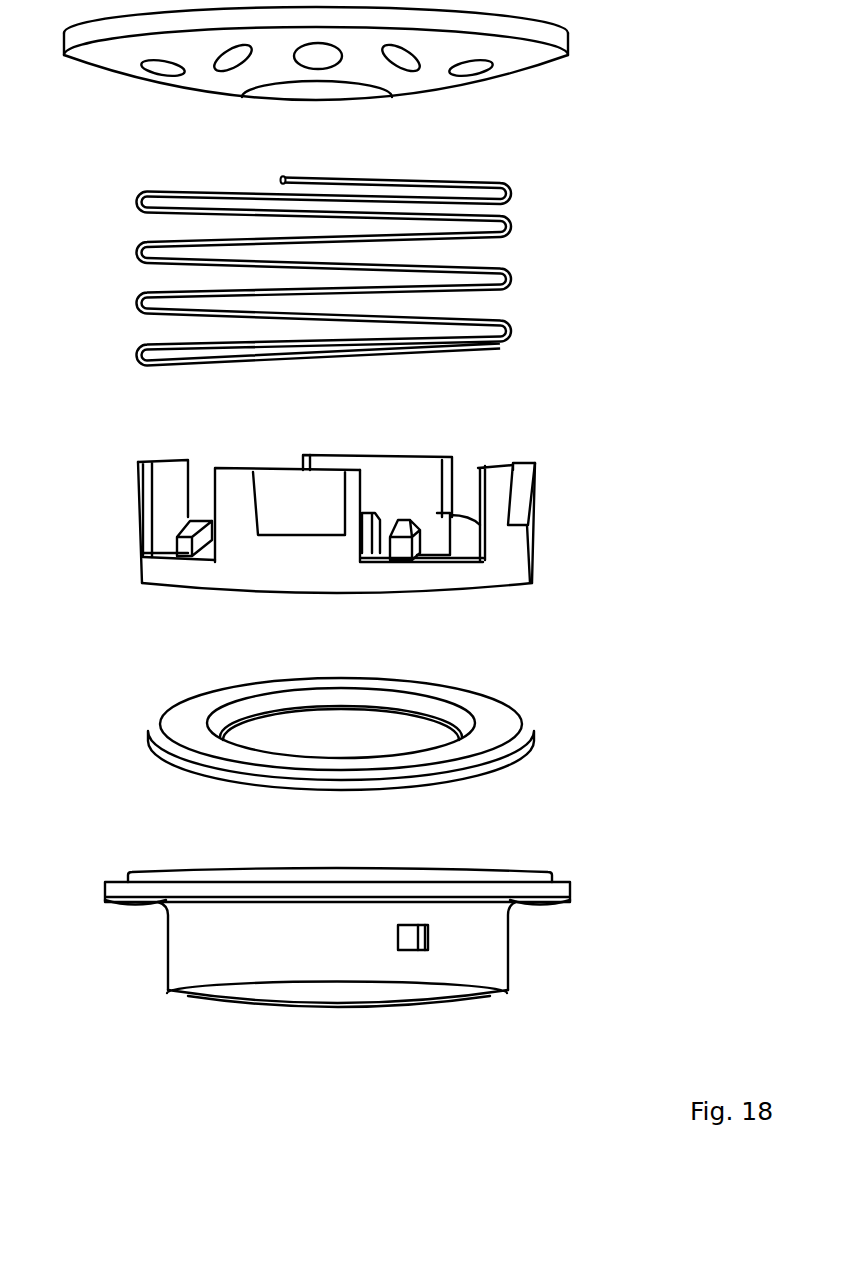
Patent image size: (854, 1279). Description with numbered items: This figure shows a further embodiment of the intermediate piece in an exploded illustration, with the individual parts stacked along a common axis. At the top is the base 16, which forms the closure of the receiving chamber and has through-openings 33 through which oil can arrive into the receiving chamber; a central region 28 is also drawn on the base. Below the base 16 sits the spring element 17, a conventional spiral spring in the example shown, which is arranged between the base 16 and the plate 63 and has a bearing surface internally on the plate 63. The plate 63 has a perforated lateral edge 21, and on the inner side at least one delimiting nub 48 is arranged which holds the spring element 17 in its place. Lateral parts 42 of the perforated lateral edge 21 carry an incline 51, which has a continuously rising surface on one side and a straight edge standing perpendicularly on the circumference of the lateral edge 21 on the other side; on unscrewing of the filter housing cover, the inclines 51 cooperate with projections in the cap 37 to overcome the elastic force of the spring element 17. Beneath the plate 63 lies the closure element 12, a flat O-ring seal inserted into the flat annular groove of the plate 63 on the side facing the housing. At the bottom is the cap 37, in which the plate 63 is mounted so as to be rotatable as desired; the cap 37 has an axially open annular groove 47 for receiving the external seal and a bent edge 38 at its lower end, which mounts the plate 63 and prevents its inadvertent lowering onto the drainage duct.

The base 16 is at (380, 82).
The through-openings 33 is at (470, 65).
The central recess 28 is at (333, 90).
The spring element 17 is at (513, 279).
The plate 63 is at (339, 491).
The delimiting nub 48 is at (391, 523).
The partial piece of the lateral wall 42 is at (492, 482).
The incline 51 is at (527, 480).
The lateral edge 21 is at (525, 548).
The closure element 12 is at (535, 735).
The cap 37 is at (369, 973).
The annular groove 47 is at (152, 903).
The bent edge 38 is at (493, 995).